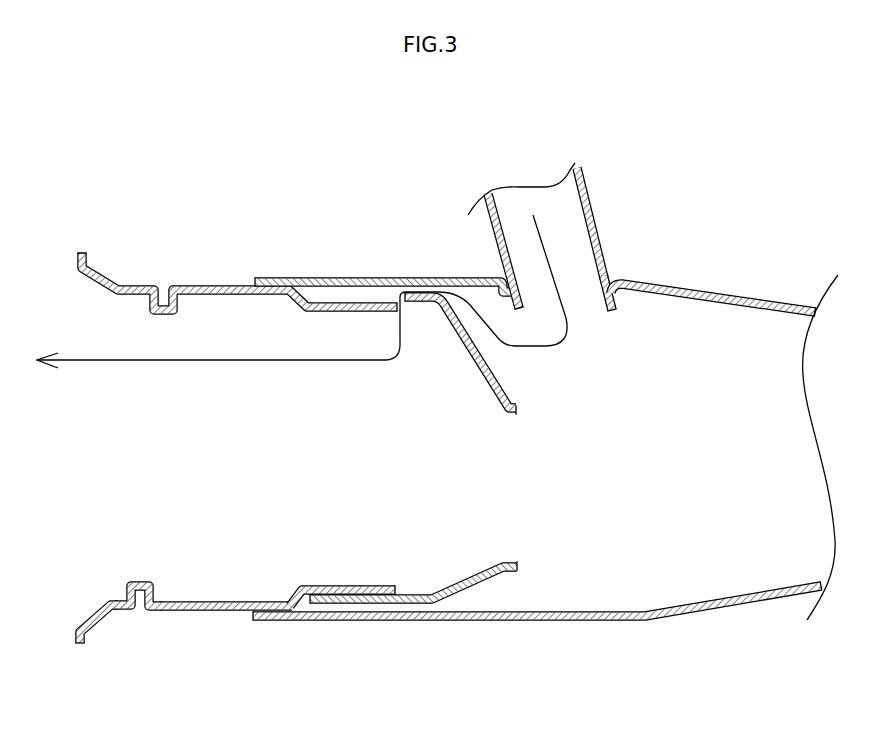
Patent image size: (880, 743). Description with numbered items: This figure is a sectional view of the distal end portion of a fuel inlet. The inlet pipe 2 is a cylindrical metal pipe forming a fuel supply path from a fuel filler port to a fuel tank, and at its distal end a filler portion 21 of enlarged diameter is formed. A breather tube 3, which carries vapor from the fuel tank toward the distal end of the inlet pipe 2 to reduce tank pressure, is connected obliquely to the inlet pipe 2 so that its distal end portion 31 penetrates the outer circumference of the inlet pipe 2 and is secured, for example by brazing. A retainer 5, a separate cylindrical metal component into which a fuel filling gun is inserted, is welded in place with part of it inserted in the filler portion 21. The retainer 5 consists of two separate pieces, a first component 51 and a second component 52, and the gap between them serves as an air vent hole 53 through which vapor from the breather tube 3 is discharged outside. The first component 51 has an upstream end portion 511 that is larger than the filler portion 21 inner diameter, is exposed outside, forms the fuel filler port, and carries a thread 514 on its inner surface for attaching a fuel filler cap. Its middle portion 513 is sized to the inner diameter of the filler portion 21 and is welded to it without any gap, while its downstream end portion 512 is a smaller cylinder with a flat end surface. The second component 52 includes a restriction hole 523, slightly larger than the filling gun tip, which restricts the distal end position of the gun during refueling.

The inlet pipe 2 is at (757, 293).
The filler portion 21 is at (537, 621).
The breather tube 3 is at (587, 218).
The distal end portion 31 is at (618, 300).
The retainer 5 is at (136, 216).
The first component 51 is at (223, 283).
The upstream end portion 511 is at (90, 633).
The downstream end portion 512 is at (335, 585).
The middle portion 513 is at (213, 611).
The thread 514 is at (140, 581).
The second component 52 is at (532, 562).
The restriction hole 523 is at (507, 415).
The air vent hole 53 is at (408, 305).